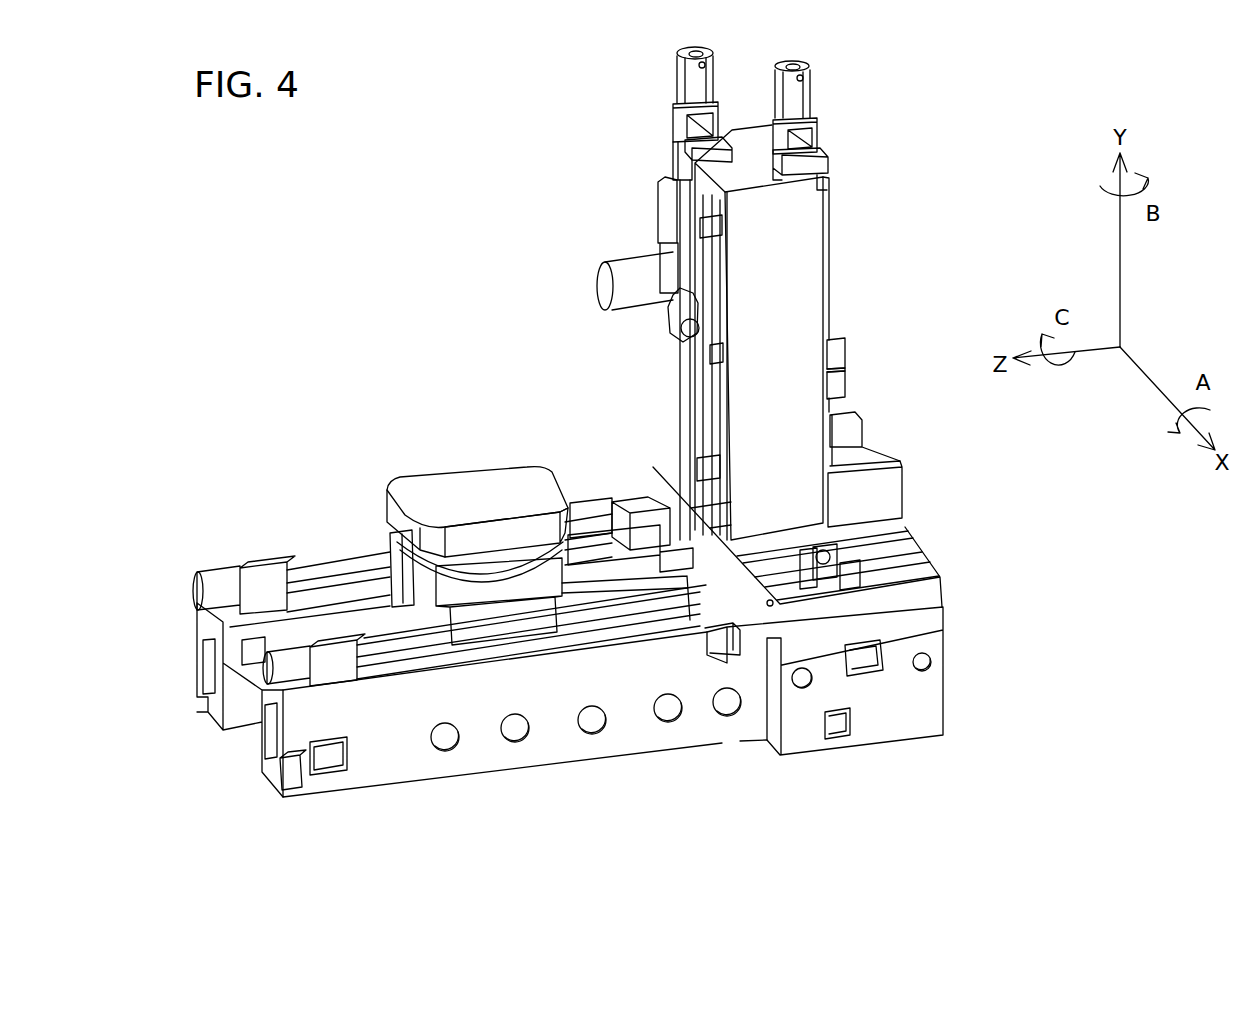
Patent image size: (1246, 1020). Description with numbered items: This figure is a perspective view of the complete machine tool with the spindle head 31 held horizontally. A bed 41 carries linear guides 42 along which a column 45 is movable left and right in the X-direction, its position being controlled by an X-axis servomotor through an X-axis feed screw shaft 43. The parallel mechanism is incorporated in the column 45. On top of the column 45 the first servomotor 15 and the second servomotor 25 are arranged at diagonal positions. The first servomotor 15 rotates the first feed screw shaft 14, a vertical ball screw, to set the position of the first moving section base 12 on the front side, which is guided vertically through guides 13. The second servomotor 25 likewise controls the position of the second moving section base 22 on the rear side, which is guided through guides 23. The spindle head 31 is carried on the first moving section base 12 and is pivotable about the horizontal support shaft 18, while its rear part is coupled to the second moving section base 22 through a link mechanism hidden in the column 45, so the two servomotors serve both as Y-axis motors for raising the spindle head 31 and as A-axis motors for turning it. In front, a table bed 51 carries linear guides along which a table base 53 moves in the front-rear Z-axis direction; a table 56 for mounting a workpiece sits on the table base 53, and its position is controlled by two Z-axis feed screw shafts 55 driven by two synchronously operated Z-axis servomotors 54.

The first moving section base 12 is at (660, 193).
The guides 13 is at (713, 233).
The first feed screw shaft 14 is at (705, 432).
The first servomotor 15 is at (677, 62).
The support shaft 18 is at (680, 338).
The second moving section base 22 is at (840, 356).
The guides 23 is at (835, 343).
The second servomotor 25 is at (812, 86).
The spindle head 31 is at (613, 262).
The bed 41 is at (950, 712).
The linear guides 42 is at (773, 546).
The X-axis feed screw shaft 43 is at (777, 546).
The column 45 is at (827, 206).
The table bed 51 is at (392, 762).
The table base 53 is at (497, 588).
The Z-axis servomotors 54 is at (227, 565).
The Z-axis feed screw shafts 55 is at (305, 568).
The table 56 is at (452, 466).